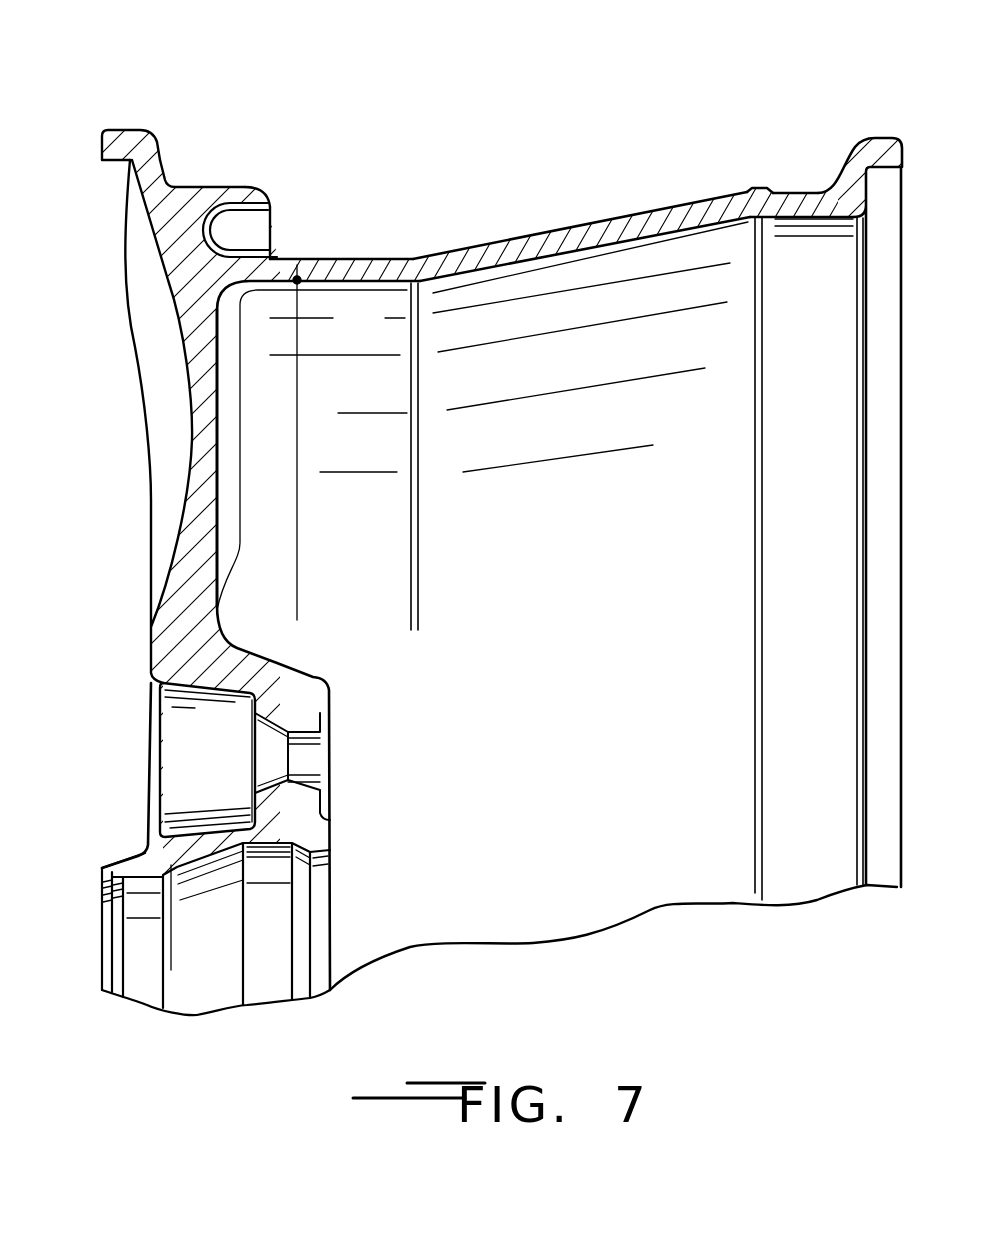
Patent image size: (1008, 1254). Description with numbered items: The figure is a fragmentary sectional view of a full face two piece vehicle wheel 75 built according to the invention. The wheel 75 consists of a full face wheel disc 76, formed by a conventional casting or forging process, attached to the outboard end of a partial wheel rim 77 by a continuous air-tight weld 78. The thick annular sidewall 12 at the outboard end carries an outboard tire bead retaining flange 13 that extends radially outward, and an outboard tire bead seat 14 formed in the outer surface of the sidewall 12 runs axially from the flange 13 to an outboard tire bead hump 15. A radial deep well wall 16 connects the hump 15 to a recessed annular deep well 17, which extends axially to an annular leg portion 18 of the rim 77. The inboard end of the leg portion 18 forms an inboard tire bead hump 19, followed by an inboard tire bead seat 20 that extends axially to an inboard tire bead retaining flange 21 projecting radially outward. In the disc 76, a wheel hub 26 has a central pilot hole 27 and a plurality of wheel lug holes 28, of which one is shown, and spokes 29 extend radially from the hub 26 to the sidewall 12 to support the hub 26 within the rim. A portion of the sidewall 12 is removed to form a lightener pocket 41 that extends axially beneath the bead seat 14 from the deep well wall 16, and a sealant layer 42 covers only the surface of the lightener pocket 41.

The sidewall 12 is at (160, 212).
The outboard tire bead retaining flange 13 is at (140, 140).
The outboard tire bead seat 14 is at (193, 178).
The outboard tire bead hump 15 is at (254, 182).
The deep well wall 16 is at (274, 208).
The deep well 17 is at (388, 260).
The leg portion 18 is at (572, 230).
The inboard tire bead hump 19 is at (748, 187).
The inboard tire bead seat 20 is at (793, 190).
The inboard tire bead retaining flange 21 is at (847, 145).
The wheel hub 26 is at (220, 677).
The central pilot hole 27 is at (348, 912).
The wheel lug holes 28 is at (350, 745).
The spokes 29 is at (192, 470).
The lightener pocket 41 is at (300, 237).
The sealant layer 42 is at (215, 228).
The two piece vehicle wheel 75 is at (492, 70).
The full face wheel disc 76 is at (128, 602).
The partial wheel rim 77 is at (524, 196).
The weld 78 is at (300, 283).